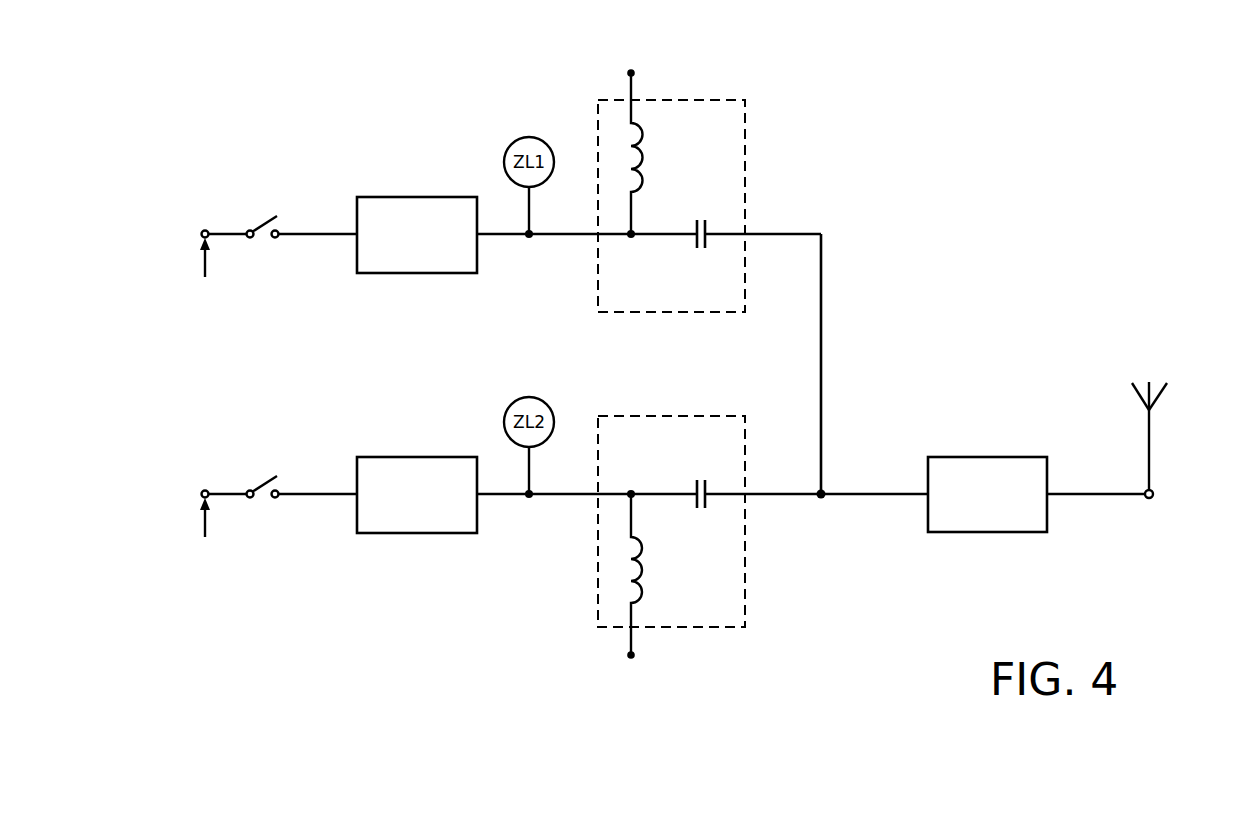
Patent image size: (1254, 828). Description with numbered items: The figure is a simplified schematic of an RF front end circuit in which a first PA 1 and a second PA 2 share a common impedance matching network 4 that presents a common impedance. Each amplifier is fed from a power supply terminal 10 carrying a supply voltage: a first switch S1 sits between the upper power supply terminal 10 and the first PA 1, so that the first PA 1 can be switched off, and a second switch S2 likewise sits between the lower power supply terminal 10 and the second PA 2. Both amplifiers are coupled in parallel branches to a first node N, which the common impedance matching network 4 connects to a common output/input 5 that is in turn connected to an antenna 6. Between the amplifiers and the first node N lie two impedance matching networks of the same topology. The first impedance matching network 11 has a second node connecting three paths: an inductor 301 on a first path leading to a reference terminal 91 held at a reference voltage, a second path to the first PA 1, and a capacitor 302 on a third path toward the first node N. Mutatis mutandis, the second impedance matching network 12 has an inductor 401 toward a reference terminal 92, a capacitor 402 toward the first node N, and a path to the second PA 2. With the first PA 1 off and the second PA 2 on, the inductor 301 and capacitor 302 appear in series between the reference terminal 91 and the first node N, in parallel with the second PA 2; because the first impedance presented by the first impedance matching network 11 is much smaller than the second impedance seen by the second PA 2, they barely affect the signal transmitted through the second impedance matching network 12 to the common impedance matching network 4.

The power supply terminal 10 is at (203, 230).
The first switch S1 is at (263, 200).
The second switch S2 is at (263, 460).
The first PA 1 is at (427, 197).
The second PA 2 is at (427, 457).
The first impedance matching network 11 is at (747, 147).
The second impedance matching network 12 is at (748, 580).
The inductor 301 is at (640, 147).
The capacitor 302 is at (695, 220).
The inductor 401 is at (640, 583).
The capacitor 402 is at (695, 508).
The reference terminal 91 is at (628, 72).
The reference terminal 92 is at (627, 657).
The first node N is at (823, 492).
The common impedance matching network 4 is at (990, 457).
The common output/input 5 is at (1153, 497).
The antenna 6 is at (1150, 432).